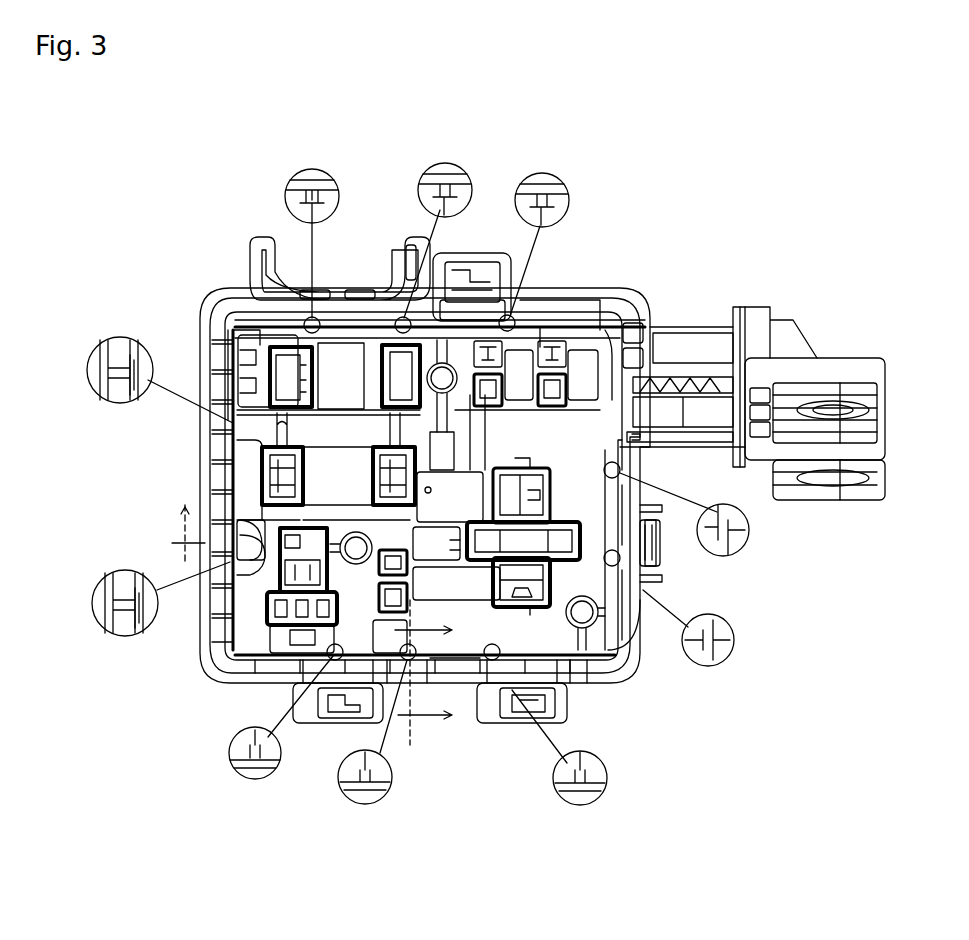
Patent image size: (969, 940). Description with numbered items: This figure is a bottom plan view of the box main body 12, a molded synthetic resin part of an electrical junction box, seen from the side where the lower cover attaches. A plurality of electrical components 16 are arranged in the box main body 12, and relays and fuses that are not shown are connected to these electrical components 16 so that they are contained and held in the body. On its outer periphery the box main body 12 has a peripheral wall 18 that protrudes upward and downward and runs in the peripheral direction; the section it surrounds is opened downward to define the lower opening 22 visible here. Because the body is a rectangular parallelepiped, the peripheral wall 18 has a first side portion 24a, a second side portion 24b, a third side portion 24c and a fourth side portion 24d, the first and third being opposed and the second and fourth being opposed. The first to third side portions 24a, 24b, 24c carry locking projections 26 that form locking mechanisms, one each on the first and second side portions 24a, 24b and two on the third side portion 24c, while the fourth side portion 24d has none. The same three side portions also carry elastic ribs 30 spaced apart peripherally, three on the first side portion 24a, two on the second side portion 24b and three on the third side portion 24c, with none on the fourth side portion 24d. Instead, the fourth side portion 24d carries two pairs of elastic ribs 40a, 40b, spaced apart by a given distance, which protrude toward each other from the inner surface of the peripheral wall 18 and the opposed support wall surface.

The box main body 12 is at (785, 218).
The electrical components 16 is at (277, 347).
The peripheral wall 18 is at (232, 340).
The lower opening 22 is at (238, 508).
The first side portion 24a is at (538, 320).
The second side portion 24b is at (633, 618).
The third side portion 24c is at (453, 655).
The fourth side portion 24d is at (233, 373).
The locking projections 26 is at (460, 287).
The elastic ribs 30 is at (312, 186).
The elastic rib 40a is at (103, 370).
The elastic rib 40b is at (128, 370).